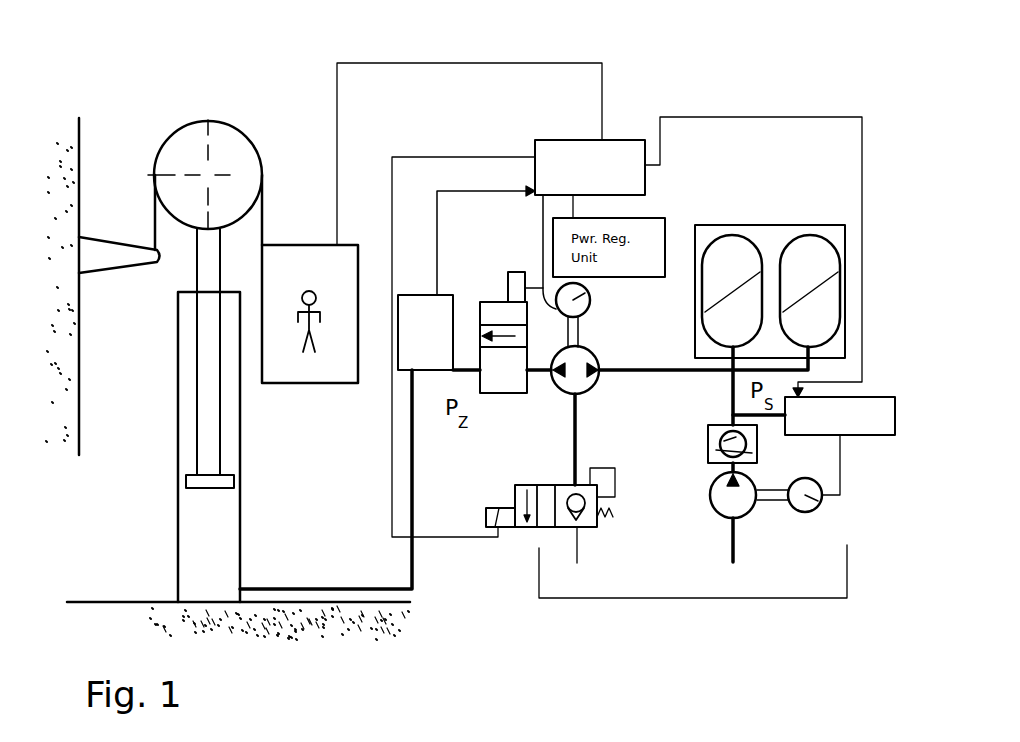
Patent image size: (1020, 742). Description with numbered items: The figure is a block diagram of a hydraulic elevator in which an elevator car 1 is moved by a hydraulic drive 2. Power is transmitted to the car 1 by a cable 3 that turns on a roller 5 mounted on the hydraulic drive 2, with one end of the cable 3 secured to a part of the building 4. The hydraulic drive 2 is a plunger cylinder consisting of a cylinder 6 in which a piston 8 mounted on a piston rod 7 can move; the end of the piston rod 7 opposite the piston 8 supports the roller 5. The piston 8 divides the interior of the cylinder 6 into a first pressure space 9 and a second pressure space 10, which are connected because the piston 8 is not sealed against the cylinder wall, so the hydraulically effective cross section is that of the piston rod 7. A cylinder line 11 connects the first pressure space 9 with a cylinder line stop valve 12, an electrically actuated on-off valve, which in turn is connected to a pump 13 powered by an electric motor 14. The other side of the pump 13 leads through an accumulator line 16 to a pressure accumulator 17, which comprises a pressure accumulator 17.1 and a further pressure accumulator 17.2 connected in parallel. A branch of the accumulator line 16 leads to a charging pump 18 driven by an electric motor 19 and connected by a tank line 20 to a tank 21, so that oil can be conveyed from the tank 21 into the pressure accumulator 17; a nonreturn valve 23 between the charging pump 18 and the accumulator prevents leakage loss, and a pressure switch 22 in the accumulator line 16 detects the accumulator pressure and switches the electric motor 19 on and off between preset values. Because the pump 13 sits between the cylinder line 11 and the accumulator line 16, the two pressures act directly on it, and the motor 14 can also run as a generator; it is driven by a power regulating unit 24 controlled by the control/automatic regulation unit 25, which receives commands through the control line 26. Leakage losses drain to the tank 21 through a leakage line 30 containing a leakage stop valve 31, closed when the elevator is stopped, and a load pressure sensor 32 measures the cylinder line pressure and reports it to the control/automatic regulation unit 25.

The elevator car 1 is at (343, 286).
The hydraulic drive 2 is at (163, 336).
The cable 3 is at (262, 205).
The building 4 is at (72, 130).
The roller 5 is at (212, 172).
The cylinder 6 is at (178, 440).
The piston rod 7 is at (205, 376).
The piston 8 is at (210, 487).
The first pressure space 9 is at (217, 532).
The second pressure space 10 is at (228, 424).
The cylinder line 11 is at (414, 436).
The cylinder line stop valve 12 is at (480, 353).
The pump 13 is at (565, 394).
The electric motor 14 is at (543, 285).
The accumulator line 16 is at (694, 380).
The pressure accumulator 17 is at (770, 249).
The pressure accumulator 17.1 is at (735, 265).
The pressure accumulator 17.2 is at (818, 264).
The charging pump 18 is at (728, 500).
The electric motor 19 is at (822, 502).
The tank line 20 is at (728, 544).
The tank 21 is at (544, 594).
The pressure switch 22 is at (866, 437).
The nonreturn valve 23 is at (708, 448).
The power regulating unit 24 is at (547, 254).
The control/automatic regulation unit 25 is at (622, 137).
The control line 26 is at (487, 63).
The leakage line 30 is at (600, 410).
The leakage stop valve 31 is at (563, 488).
The load pressure sensor 32 is at (417, 293).